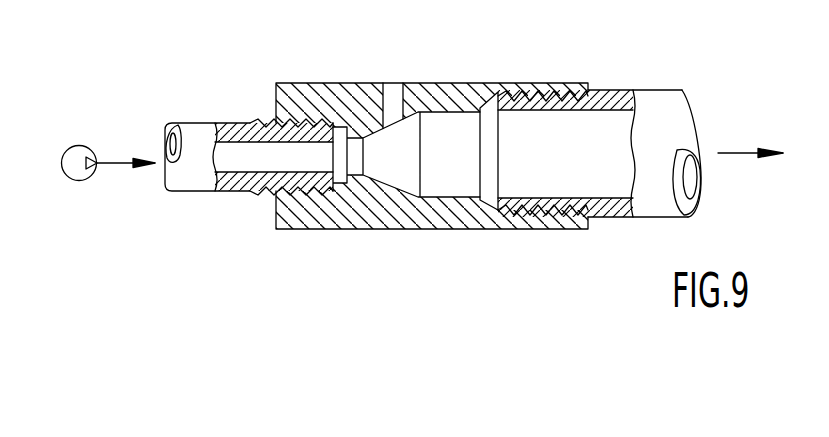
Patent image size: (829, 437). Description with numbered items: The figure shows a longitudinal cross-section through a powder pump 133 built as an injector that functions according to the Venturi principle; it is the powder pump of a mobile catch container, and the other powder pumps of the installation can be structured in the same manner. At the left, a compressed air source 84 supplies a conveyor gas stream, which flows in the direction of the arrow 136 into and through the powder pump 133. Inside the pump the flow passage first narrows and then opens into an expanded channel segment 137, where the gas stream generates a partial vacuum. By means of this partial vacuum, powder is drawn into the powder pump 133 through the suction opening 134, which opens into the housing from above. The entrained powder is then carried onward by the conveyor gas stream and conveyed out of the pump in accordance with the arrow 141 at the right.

The compressed air source 84 is at (77, 182).
The powder pump 133 is at (507, 70).
The suction opening 134 is at (400, 82).
The arrow 136 is at (105, 163).
The expanded channel segment 137 is at (397, 158).
The arrow 141 is at (747, 155).